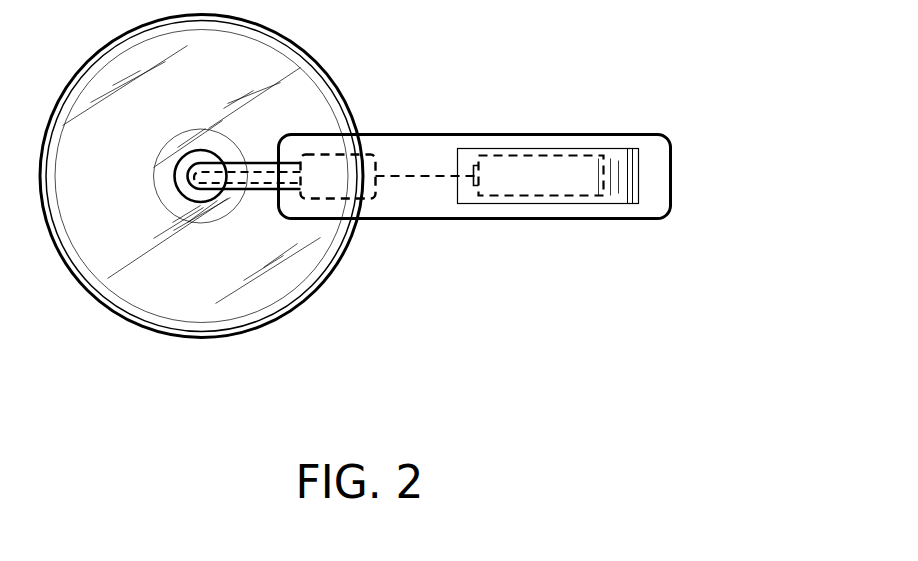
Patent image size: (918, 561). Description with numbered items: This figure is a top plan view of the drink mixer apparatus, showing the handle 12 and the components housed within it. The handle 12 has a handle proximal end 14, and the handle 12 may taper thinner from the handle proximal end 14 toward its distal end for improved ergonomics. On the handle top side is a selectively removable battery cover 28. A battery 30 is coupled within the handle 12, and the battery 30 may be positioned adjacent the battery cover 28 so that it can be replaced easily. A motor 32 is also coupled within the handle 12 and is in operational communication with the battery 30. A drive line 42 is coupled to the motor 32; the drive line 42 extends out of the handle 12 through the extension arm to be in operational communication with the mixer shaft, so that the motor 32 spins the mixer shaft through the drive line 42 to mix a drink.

The handle 12 is at (413, 133).
The handle proximal end 14 is at (670, 170).
The battery cover 28 is at (462, 157).
The battery 30 is at (547, 162).
The motor 32 is at (348, 187).
The drive line 42 is at (250, 177).